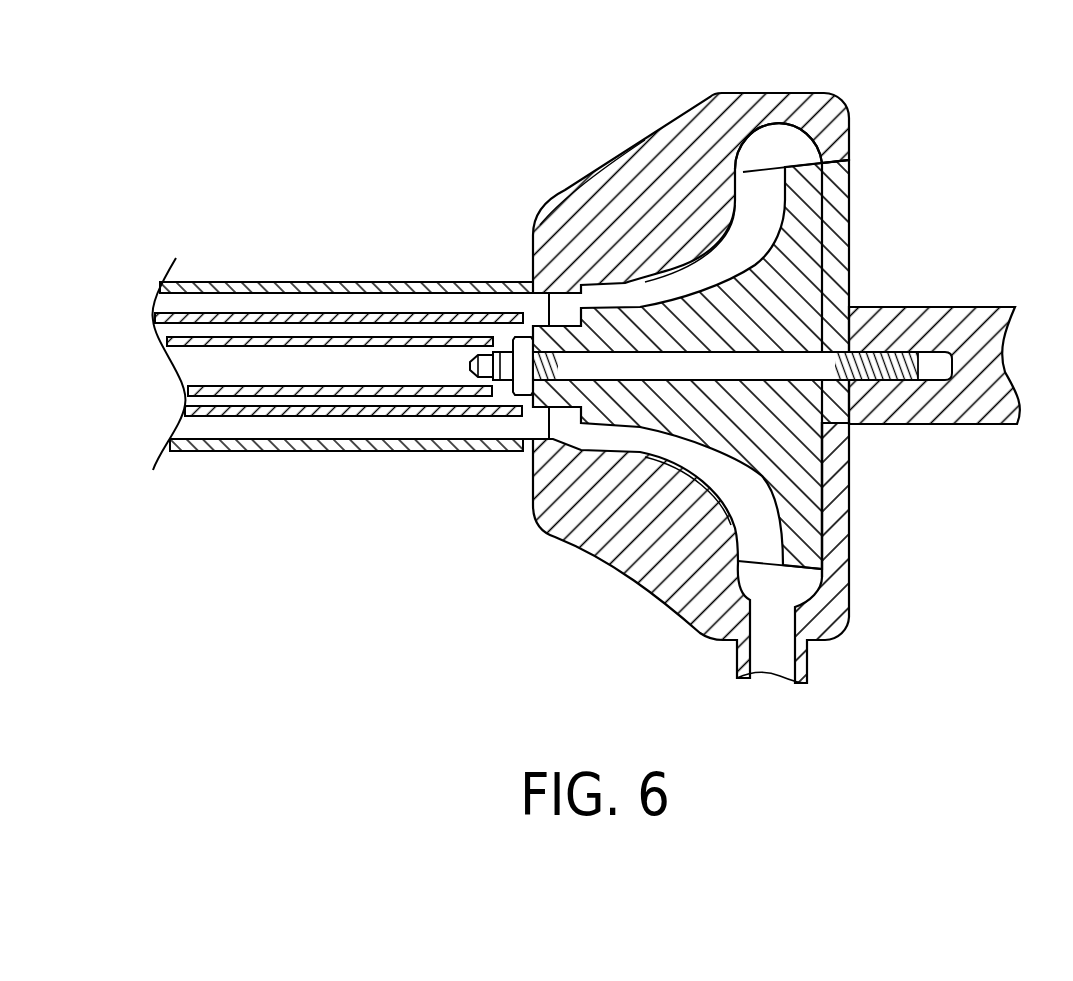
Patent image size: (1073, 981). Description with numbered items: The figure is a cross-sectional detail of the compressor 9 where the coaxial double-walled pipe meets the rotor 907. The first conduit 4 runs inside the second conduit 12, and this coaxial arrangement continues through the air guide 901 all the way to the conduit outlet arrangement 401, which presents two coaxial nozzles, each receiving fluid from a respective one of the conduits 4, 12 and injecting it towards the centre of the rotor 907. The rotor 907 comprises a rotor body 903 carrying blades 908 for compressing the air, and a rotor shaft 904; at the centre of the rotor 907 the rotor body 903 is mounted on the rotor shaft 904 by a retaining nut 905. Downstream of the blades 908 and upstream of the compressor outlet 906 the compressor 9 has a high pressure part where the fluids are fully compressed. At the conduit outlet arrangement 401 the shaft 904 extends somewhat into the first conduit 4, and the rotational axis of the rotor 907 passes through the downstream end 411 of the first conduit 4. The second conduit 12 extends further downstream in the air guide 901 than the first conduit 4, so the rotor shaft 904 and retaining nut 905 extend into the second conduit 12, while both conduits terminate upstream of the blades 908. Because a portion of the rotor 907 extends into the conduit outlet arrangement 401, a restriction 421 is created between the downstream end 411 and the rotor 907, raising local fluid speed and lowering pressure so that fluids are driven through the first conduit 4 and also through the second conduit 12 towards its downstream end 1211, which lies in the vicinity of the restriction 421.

The first conduit 4 is at (417, 337).
The compressor 9 is at (613, 152).
The second conduit 12 is at (256, 311).
The conduit outlet arrangement 401 is at (433, 365).
The downstream end of the first conduit 411 is at (503, 343).
The restriction 421 is at (498, 384).
The air guide 901 is at (340, 282).
The rotor body 903 is at (527, 405).
The rotor shaft 904 is at (473, 362).
The retaining nut 905 is at (517, 337).
The compressor outlet 906 is at (778, 650).
The rotor 907 is at (797, 473).
The blades 908 is at (765, 188).
The downstream end of the second conduit 1211 is at (530, 297).